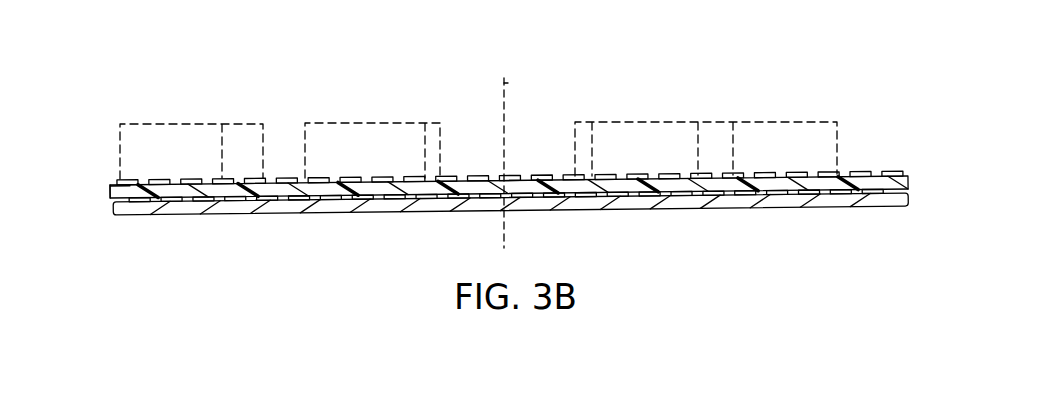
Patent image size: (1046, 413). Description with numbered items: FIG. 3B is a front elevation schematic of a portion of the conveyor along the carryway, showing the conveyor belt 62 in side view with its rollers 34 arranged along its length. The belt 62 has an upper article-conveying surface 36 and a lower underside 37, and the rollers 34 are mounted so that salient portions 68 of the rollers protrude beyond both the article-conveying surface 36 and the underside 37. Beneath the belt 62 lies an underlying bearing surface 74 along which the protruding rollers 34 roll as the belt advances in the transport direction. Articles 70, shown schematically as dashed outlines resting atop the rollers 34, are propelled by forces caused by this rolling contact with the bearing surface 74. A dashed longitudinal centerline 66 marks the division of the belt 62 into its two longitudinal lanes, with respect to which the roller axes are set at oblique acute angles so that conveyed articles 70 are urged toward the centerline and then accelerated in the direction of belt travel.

The rollers 34 is at (857, 173).
The article-conveying surface 36 is at (275, 176).
The underside 37 is at (338, 200).
The conveyor belt 62 is at (110, 185).
The longitudinal centerline 66 is at (511, 82).
The salient portions 68 is at (897, 172).
The articles 70 is at (784, 121).
The bearing surface 74 is at (574, 198).